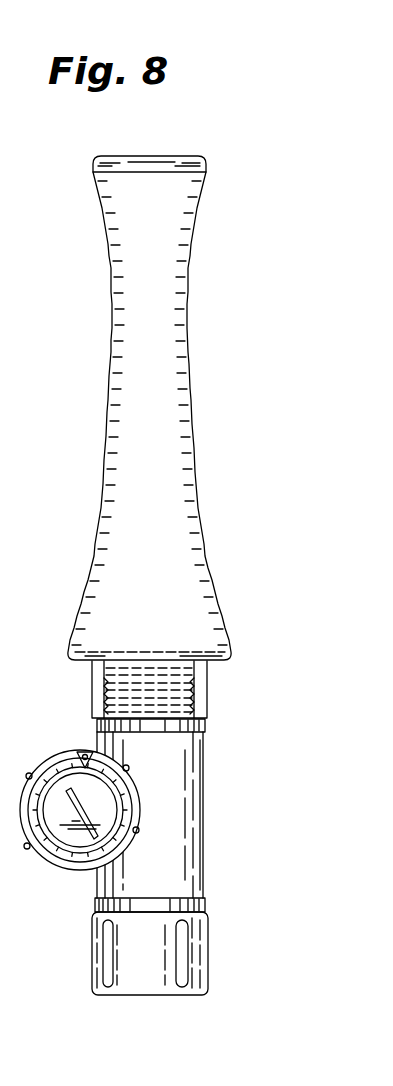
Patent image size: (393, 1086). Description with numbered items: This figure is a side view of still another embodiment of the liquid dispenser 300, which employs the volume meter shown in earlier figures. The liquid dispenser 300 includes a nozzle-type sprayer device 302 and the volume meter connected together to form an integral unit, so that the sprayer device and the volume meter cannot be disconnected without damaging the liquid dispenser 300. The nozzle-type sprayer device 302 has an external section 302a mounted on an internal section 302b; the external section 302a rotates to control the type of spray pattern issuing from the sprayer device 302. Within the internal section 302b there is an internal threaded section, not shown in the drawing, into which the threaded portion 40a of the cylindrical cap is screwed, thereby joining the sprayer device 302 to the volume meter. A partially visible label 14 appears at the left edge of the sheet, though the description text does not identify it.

The liquid dispenser 300 is at (200, 440).
The nozzle-type sprayer device 302 is at (168, 306).
The external section 302a is at (189, 224).
The internal section 302b is at (208, 679).
The threaded portion 40a is at (208, 714).
The pressure gauge 14 is at (70, 653).